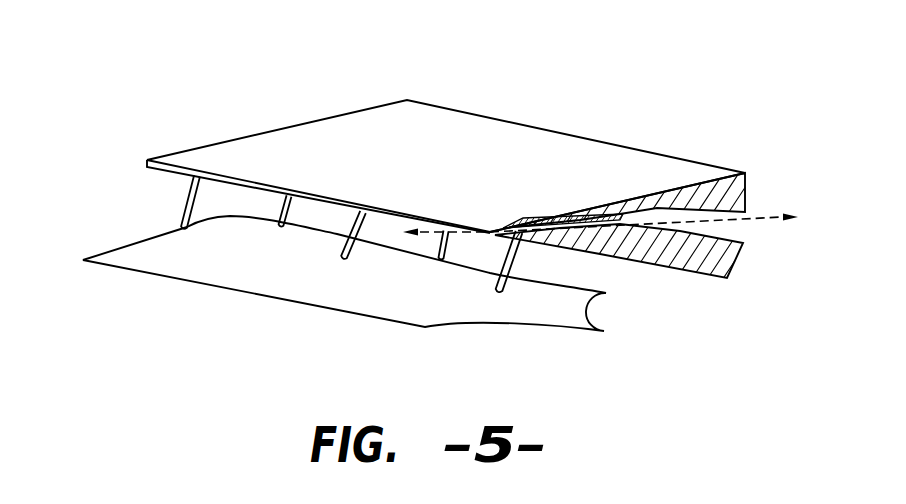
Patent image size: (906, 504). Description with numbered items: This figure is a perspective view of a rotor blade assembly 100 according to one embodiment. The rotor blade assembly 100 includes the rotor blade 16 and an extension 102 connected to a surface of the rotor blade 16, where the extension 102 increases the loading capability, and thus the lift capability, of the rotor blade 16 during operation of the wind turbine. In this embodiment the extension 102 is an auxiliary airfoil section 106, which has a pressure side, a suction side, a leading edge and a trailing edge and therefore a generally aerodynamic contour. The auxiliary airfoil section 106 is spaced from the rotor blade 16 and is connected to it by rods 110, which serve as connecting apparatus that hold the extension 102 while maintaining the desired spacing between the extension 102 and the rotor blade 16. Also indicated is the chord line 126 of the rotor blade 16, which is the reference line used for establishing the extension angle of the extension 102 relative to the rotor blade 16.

The rotor blade assembly 100 is at (247, 84).
The rotor blade 16 is at (357, 135).
The extension 102 is at (88, 228).
The auxiliary airfoil section 106 is at (167, 252).
The rods 110 is at (333, 233).
The chord line 126 is at (757, 217).